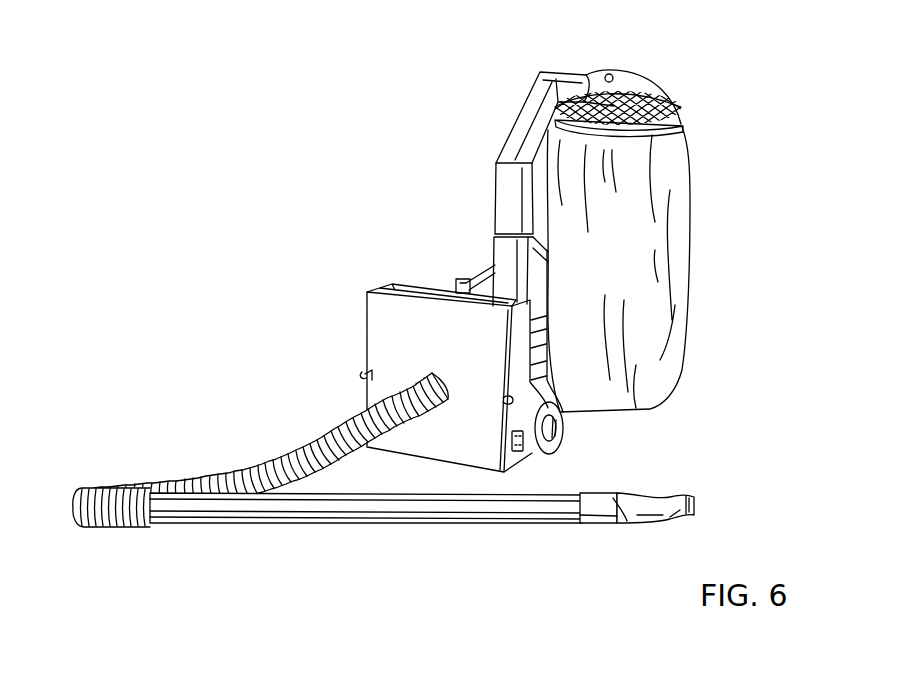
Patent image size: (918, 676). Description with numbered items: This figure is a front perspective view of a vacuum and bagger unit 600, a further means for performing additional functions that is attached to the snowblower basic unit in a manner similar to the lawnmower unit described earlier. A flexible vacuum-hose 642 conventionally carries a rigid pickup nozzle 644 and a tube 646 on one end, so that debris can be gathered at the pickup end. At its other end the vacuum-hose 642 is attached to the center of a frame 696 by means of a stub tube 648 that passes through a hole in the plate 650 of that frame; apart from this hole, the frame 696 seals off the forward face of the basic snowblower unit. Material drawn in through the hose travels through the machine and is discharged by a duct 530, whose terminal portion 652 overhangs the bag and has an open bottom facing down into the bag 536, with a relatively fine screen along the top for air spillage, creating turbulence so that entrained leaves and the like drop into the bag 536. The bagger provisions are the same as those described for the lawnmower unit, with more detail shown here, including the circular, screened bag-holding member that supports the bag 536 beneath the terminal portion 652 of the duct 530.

The vacuum and bagger unit 600 is at (262, 312).
The duct 530 is at (512, 136).
The bag 536 is at (672, 367).
The flexible vacuum-hose 642 is at (229, 473).
The rigid pickup nozzle 644 is at (625, 522).
The tube 646 is at (373, 512).
The stub tube 648 is at (426, 371).
The plate 650 is at (373, 350).
The terminal portion 652 is at (578, 36).
The frame 696 is at (366, 288).